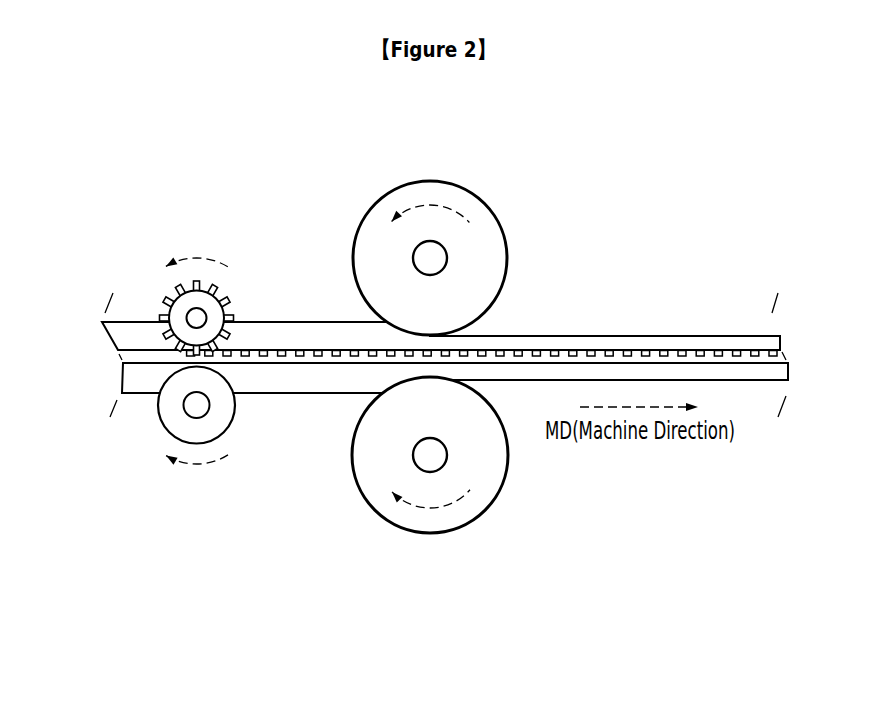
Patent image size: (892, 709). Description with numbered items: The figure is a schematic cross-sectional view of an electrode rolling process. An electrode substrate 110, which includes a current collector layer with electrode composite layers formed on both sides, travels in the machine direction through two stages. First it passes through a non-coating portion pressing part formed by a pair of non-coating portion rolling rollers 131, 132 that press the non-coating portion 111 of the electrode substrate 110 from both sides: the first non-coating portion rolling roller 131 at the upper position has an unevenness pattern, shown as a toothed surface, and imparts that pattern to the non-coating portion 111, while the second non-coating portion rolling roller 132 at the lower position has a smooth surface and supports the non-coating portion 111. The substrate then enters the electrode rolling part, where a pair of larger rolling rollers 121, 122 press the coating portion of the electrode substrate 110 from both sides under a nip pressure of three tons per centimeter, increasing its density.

The electrode substrate 110 is at (288, 300).
The non-coating portion 111 is at (640, 356).
The rolling roller 121 is at (472, 192).
The rolling roller 122 is at (440, 533).
The first non-coating portion rolling roller 131 is at (163, 297).
The second non-coating portion rolling roller 132 is at (160, 421).